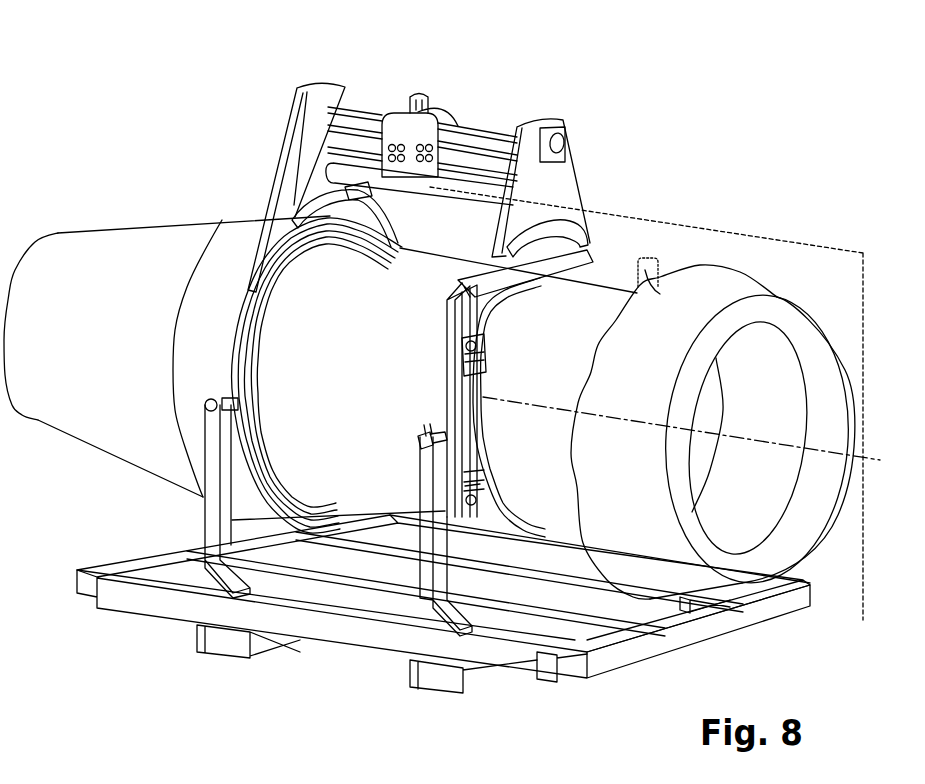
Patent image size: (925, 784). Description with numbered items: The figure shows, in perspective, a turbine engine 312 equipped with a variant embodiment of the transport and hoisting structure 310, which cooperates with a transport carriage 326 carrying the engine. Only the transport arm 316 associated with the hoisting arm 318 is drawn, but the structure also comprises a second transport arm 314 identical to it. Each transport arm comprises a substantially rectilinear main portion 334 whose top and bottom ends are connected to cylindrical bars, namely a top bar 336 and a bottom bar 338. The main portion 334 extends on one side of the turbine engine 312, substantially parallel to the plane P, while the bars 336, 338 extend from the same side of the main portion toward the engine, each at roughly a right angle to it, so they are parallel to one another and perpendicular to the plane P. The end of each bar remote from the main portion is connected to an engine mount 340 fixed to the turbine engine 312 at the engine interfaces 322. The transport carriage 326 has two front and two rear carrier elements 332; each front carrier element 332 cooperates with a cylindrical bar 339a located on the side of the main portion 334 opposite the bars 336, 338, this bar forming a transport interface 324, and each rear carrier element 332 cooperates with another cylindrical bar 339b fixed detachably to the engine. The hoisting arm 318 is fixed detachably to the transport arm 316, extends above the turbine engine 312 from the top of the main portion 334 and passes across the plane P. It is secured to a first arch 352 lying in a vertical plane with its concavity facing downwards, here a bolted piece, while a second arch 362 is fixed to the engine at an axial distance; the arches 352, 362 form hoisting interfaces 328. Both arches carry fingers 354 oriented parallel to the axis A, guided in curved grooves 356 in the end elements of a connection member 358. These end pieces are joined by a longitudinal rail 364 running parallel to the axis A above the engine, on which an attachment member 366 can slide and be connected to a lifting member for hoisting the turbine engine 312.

The transport and hoisting structure 310 is at (140, 528).
The turbine engine 312 is at (57, 230).
The second transport arm 314 is at (660, 292).
The hoisting arm 318 is at (605, 252).
The engine interface 322 is at (480, 372).
The transport interface 324 is at (417, 447).
The transport carriage 326 is at (92, 615).
The hoisting interface 328 is at (286, 334).
The carrier element 332 is at (207, 527).
The main portion 334 is at (447, 393).
The transport arm 316 is at (443, 383).
The top bar 336 is at (473, 367).
The bottom bar 338 is at (480, 483).
The cylindrical bar 339a is at (357, 433).
The cylindrical bar 339b is at (207, 433).
The engine mount 340 is at (533, 423).
The first arch 352 is at (595, 242).
The finger 354 is at (353, 224).
The curved groove 356 is at (292, 217).
The connection member 358 is at (500, 119).
The second arch 362 is at (262, 247).
The longitudinal rail 364 is at (377, 147).
The attachment member 366 is at (450, 108).
The plane P is at (863, 280).
The axis A is at (817, 450).